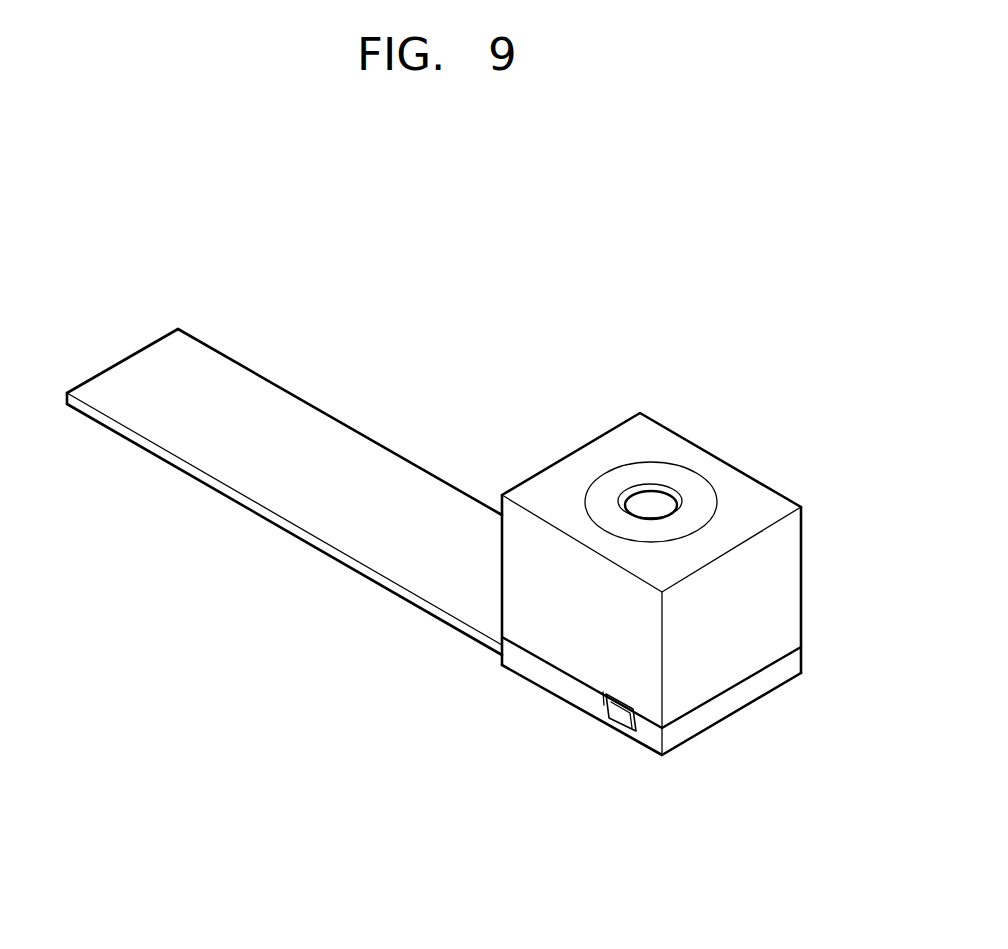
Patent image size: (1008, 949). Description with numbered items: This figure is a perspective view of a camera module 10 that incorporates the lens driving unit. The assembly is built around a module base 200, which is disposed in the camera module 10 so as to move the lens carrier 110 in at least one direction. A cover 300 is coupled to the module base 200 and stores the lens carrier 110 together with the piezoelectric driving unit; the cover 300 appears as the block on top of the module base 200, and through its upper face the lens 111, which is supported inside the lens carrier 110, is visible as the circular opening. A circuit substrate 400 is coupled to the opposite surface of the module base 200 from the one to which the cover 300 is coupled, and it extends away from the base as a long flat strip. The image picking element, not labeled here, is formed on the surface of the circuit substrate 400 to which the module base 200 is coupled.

The camera module 10 is at (792, 431).
The lens carrier 110 is at (697, 490).
The lens 111 is at (656, 497).
The module base 200 is at (748, 694).
The cover 300 is at (790, 585).
The circuit substrate 400 is at (388, 583).